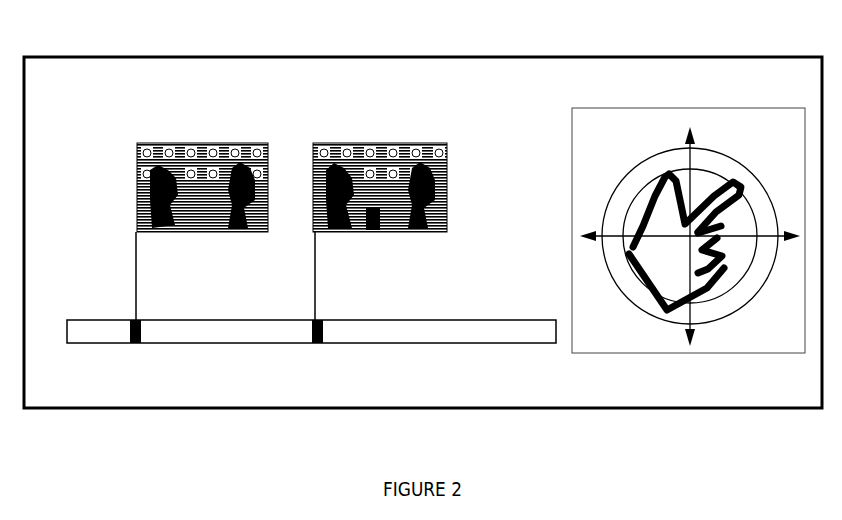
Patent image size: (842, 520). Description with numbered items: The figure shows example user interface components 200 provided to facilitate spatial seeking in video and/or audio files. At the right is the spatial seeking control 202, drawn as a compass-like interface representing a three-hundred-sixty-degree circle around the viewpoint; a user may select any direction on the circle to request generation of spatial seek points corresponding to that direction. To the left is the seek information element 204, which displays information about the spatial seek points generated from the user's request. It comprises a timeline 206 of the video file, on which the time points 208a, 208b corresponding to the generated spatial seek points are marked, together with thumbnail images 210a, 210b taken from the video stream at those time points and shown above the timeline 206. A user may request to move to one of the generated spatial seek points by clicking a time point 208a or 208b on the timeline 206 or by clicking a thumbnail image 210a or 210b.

The user interface display 200 is at (562, 56).
The spatial seeking control 202 is at (703, 151).
The seek information element 204 is at (307, 92).
The timeline 206 is at (493, 319).
The time point 208a is at (143, 318).
The time point 208b is at (325, 318).
The thumbnail image 210a is at (200, 143).
The thumbnail image 210b is at (385, 143).